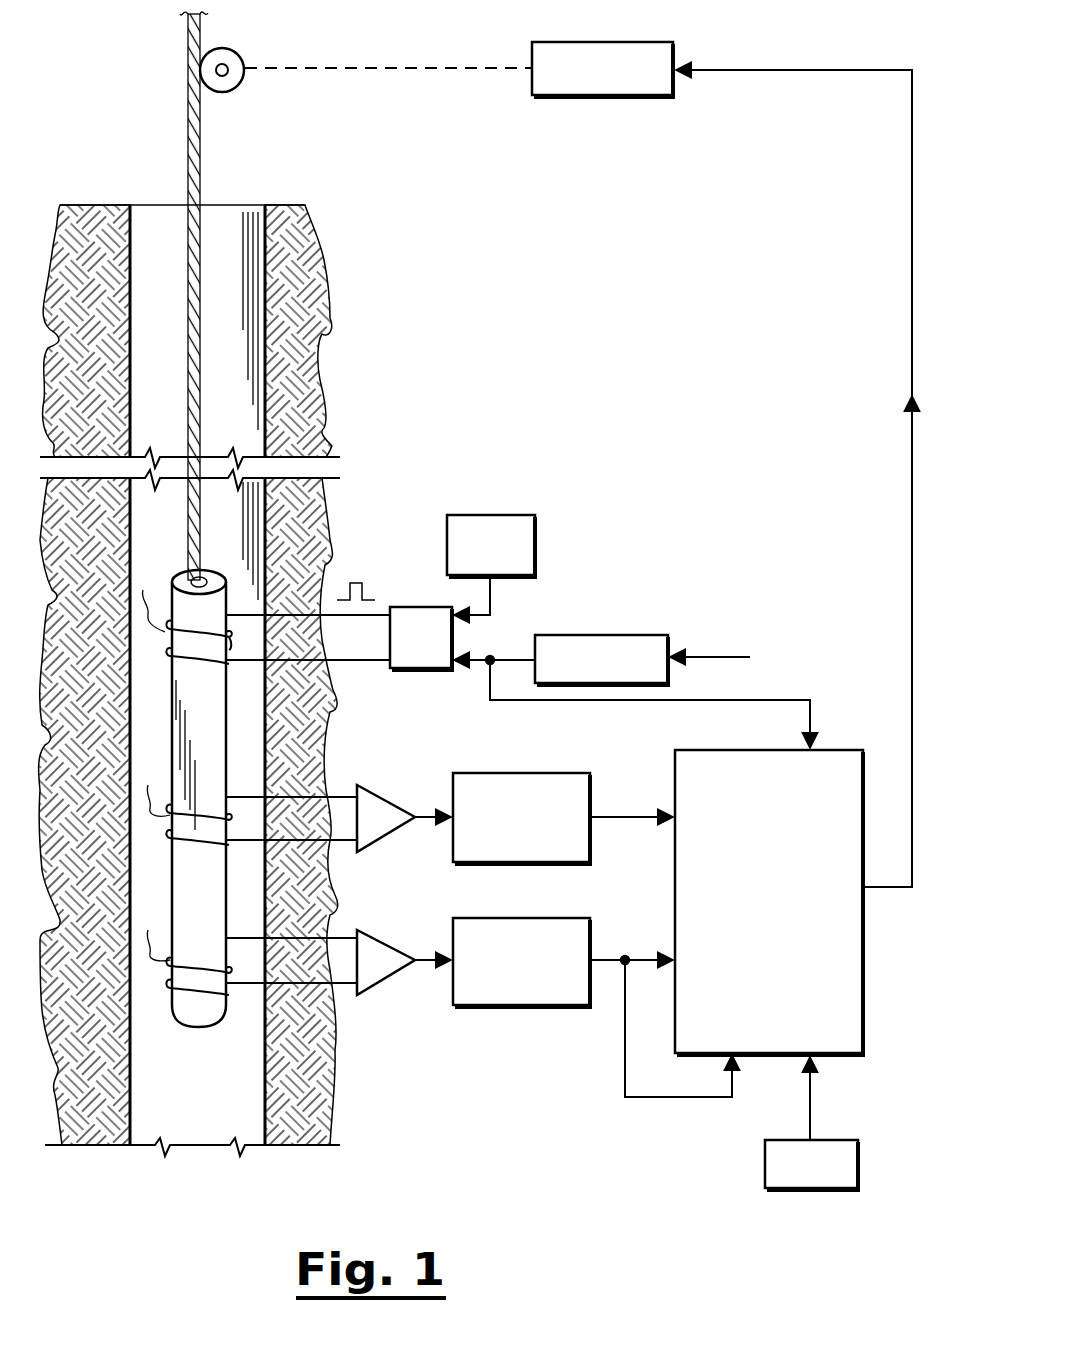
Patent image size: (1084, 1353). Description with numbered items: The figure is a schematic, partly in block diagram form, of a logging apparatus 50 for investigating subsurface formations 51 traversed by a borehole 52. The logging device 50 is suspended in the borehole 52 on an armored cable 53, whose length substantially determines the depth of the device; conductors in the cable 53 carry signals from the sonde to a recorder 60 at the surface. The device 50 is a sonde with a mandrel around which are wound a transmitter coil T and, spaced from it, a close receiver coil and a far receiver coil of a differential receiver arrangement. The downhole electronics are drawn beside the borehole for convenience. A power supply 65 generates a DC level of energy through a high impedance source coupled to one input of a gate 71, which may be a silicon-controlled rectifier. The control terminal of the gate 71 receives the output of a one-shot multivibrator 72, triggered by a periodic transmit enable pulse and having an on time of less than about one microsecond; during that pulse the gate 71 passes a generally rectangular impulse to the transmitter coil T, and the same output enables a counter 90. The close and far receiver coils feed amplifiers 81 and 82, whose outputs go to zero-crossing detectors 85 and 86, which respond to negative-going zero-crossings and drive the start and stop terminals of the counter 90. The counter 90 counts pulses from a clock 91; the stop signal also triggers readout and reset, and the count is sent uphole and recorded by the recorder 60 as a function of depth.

The logging apparatus 50 is at (176, 573).
The subsurface formations 51 is at (100, 225).
The borehole 52 is at (165, 230).
The armored cable 53 is at (205, 240).
The recorder 60 is at (645, 44).
The power supply 65 is at (537, 530).
The gate 71 is at (408, 607).
The one-shot multivibrator 72 is at (593, 635).
The amplifier 81 is at (377, 792).
The amplifier 82 is at (377, 934).
The zero-crossing detector 85 is at (498, 773).
The zero-crossing detector 86 is at (503, 918).
The counter 90 is at (675, 760).
The clock 91 is at (765, 1158).